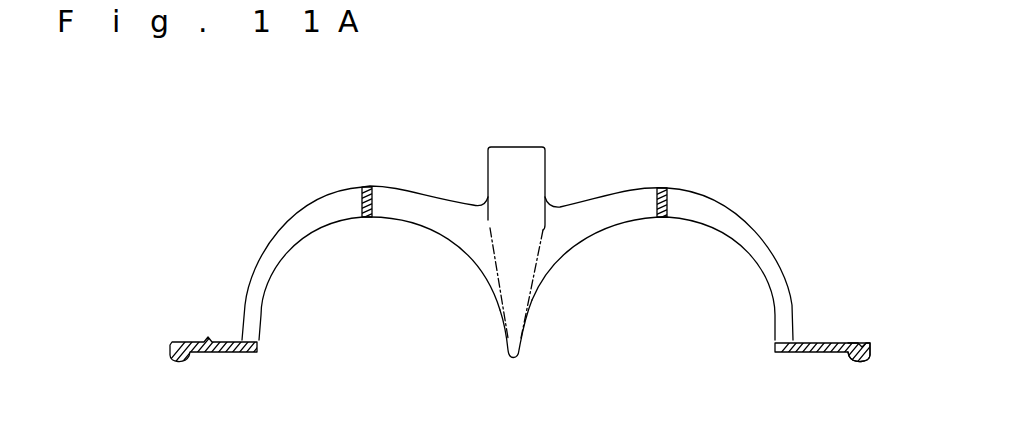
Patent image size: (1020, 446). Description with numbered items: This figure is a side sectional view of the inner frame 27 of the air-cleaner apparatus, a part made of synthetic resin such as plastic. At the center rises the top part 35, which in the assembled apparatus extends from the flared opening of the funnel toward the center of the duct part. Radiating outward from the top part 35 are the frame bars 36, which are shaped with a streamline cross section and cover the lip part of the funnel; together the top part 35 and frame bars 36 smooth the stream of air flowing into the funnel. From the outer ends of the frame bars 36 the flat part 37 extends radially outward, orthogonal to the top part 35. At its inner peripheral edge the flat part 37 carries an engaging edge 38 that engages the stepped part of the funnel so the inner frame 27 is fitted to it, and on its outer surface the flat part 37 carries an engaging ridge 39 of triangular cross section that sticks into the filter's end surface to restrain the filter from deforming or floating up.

The inner frame 27 is at (532, 256).
The top part 35 is at (540, 280).
The frame bars 36 is at (322, 230).
The flat part 37 is at (807, 340).
The engaging edge 38 is at (258, 347).
The engaging ridge 39 is at (827, 340).